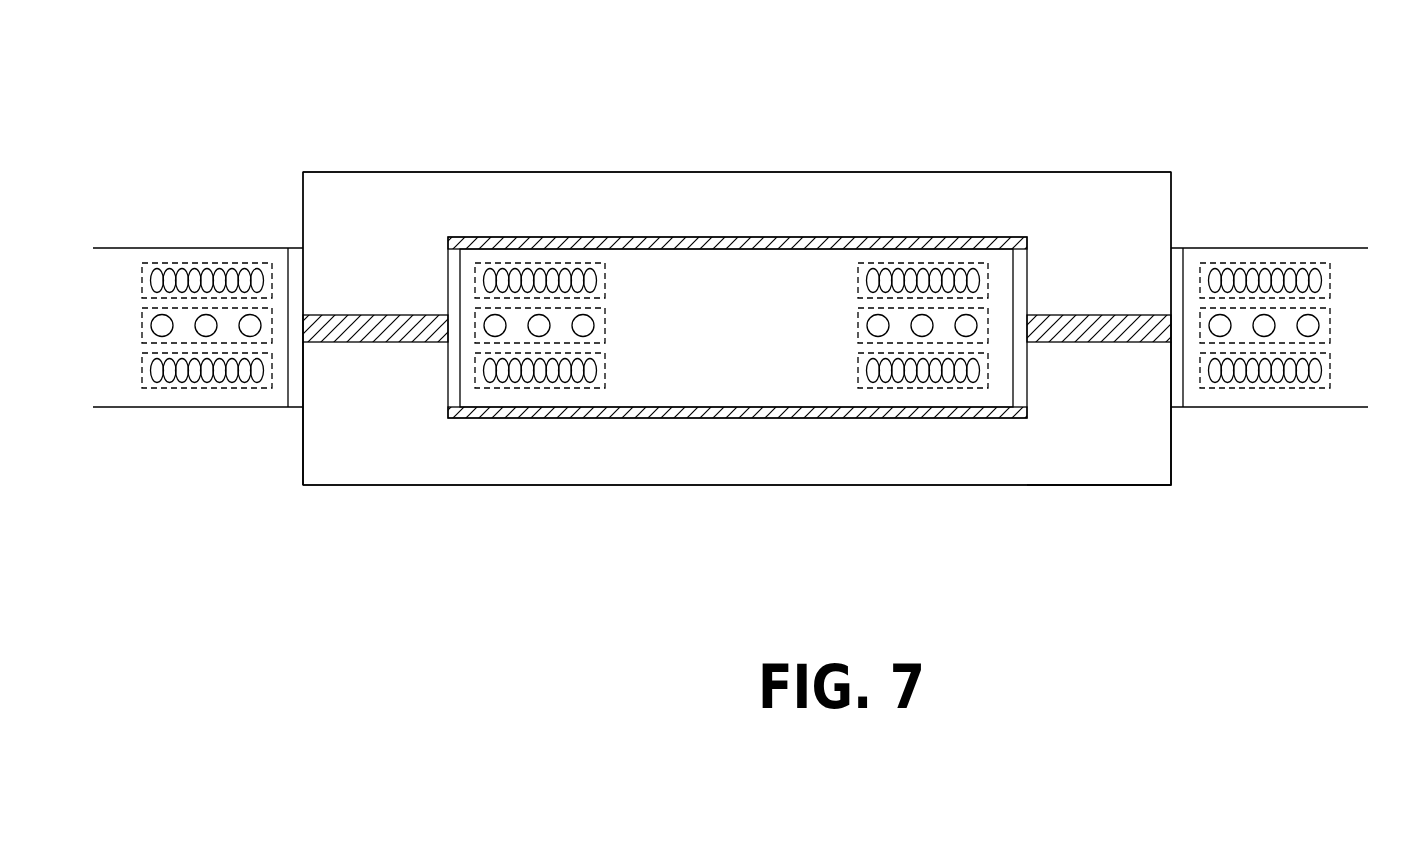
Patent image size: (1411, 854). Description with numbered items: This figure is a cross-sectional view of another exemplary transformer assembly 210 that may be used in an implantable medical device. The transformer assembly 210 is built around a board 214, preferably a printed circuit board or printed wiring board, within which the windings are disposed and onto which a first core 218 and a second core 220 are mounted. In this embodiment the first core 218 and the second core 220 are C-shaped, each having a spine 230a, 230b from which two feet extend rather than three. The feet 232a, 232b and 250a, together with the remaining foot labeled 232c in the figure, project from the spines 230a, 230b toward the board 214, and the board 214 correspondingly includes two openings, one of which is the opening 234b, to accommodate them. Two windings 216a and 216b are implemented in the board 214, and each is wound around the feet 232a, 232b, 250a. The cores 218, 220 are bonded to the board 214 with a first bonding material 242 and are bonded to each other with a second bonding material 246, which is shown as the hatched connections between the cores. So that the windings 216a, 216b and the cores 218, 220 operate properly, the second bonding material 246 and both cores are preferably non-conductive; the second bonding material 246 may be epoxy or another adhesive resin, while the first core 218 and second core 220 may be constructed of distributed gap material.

The transformer assembly 210 is at (1052, 92).
The board 214 is at (118, 275).
The winding 216a is at (126, 392).
The winding 216b is at (1285, 248).
The first core 218 is at (455, 188).
The second core 220 is at (375, 460).
The spine 230a is at (648, 213).
The spine 230b is at (937, 465).
The foot 232a is at (327, 288).
The foot 232b is at (1148, 243).
The housing lower right wall 232c is at (1112, 465).
The opening 234b is at (1177, 393).
The first bonding material 242 is at (737, 333).
The second bonding material 246 is at (418, 315).
The foot 250a is at (316, 390).